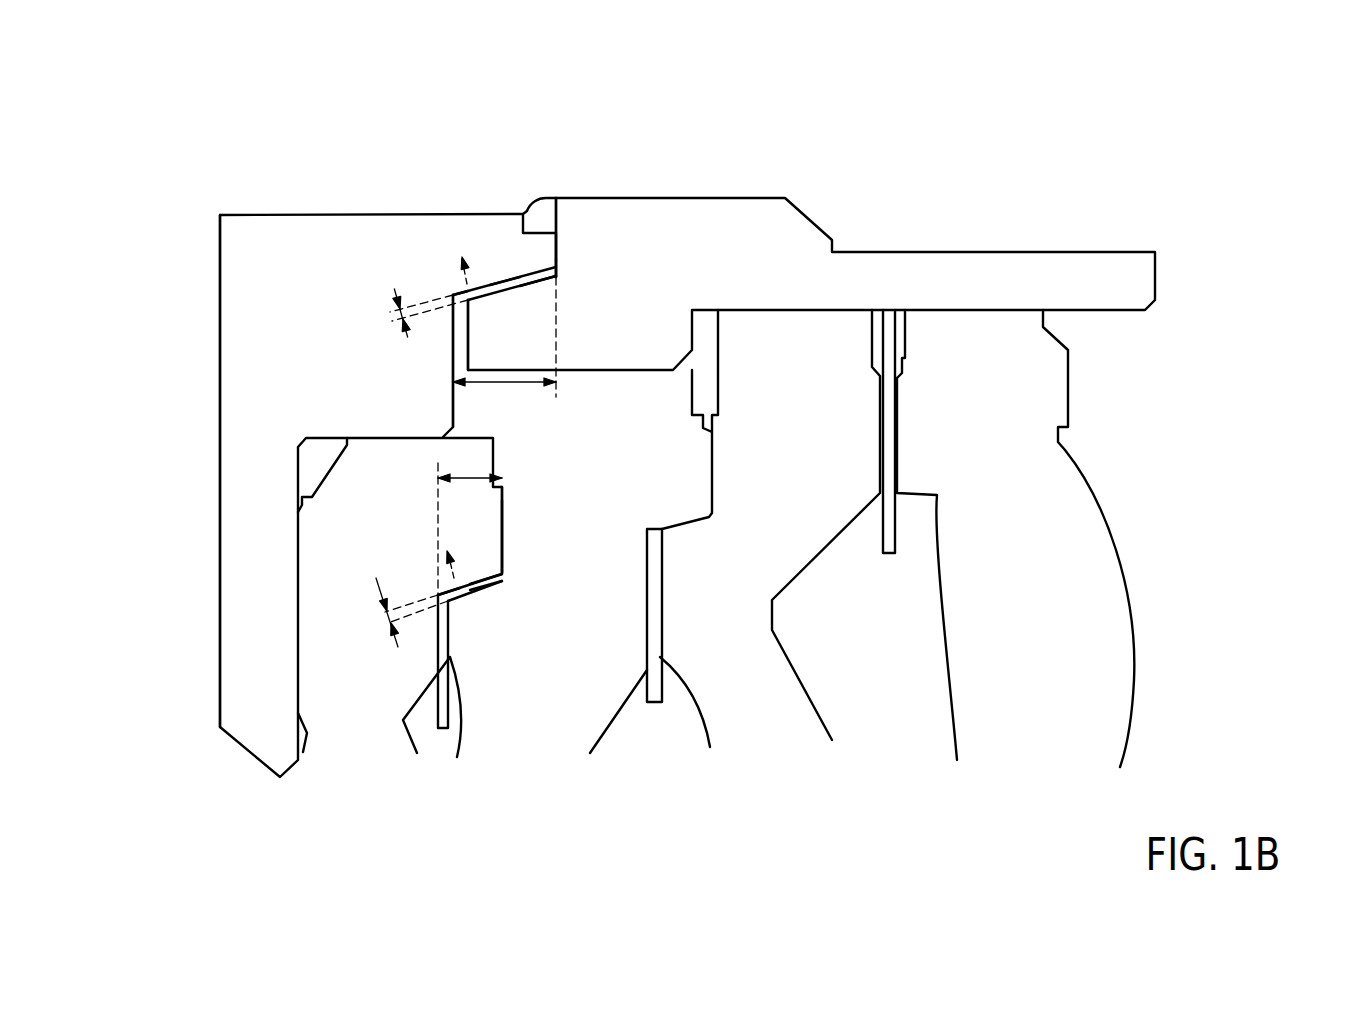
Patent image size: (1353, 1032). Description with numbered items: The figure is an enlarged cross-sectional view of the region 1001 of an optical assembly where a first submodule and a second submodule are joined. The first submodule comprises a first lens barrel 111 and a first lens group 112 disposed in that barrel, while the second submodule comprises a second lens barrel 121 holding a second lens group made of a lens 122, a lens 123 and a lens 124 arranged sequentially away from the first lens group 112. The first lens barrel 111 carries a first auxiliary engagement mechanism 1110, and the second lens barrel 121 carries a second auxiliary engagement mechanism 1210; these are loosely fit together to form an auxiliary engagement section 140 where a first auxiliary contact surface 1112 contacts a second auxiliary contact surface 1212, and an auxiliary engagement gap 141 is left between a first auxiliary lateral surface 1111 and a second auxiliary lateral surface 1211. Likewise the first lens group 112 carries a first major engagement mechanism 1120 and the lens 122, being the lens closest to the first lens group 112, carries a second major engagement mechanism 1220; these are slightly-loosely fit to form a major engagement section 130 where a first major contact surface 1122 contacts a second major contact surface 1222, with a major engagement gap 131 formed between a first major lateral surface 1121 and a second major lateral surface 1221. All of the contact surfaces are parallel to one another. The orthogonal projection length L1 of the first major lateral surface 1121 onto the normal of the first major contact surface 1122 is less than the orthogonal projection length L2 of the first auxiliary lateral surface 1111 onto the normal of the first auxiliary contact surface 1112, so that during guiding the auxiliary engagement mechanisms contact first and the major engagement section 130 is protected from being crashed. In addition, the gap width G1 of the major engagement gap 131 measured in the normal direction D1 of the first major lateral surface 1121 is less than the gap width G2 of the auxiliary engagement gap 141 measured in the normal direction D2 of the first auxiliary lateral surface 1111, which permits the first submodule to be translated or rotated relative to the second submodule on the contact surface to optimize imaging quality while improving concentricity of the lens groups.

The region 1001 is at (186, 847).
The first lens barrel 111 is at (240, 315).
The first lens group 112 is at (320, 532).
The second lens barrel 121 is at (790, 240).
The lens 122 is at (652, 397).
The lens 123 is at (842, 340).
The lens 124 is at (1075, 510).
The major engagement section 130 is at (657, 860).
The major engagement gap 131 is at (467, 594).
The auxiliary engagement section 140 is at (465, 88).
The auxiliary engagement gap 141 is at (483, 294).
The first auxiliary engagement mechanism 1110 is at (677, 140).
The first auxiliary lateral surface 1111 is at (547, 272).
The first auxiliary contact surface 1112 is at (558, 253).
The first major engagement mechanism 1120 is at (697, 805).
The first major lateral surface 1121 is at (500, 577).
The first major contact surface 1122 is at (505, 547).
The second auxiliary engagement mechanism 1210 is at (525, 140).
The second auxiliary lateral surface 1211 is at (505, 288).
The second auxiliary contact surface 1212 is at (556, 247).
The second major engagement mechanism 1220 is at (552, 805).
The second major lateral surface 1221 is at (487, 584).
The second major contact surface 1222 is at (500, 522).
The gap width G1 is at (387, 603).
The gap width G2 is at (397, 312).
The normal direction D1 is at (450, 569).
The normal direction D2 is at (467, 282).
The orthogonal projection length L1 is at (470, 461).
The orthogonal projection length L2 is at (504, 401).